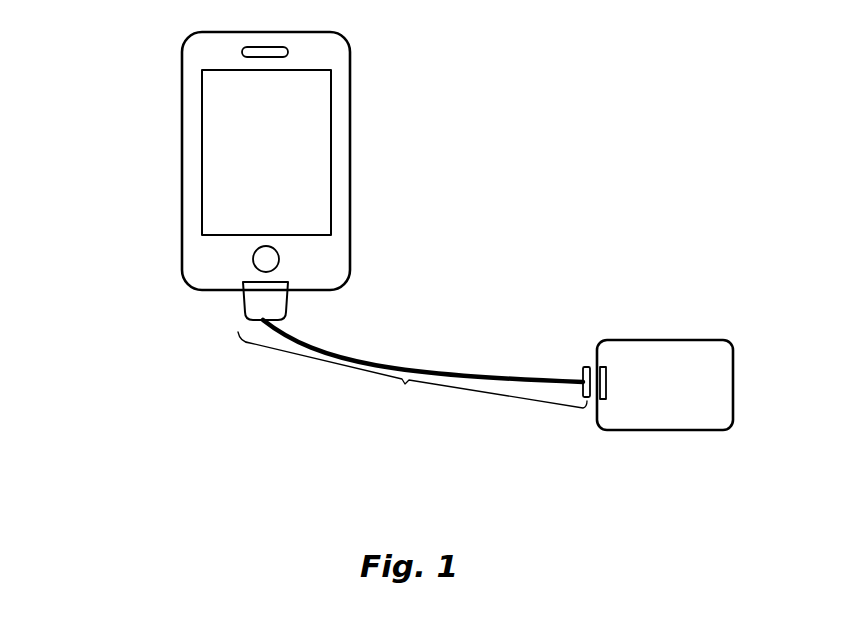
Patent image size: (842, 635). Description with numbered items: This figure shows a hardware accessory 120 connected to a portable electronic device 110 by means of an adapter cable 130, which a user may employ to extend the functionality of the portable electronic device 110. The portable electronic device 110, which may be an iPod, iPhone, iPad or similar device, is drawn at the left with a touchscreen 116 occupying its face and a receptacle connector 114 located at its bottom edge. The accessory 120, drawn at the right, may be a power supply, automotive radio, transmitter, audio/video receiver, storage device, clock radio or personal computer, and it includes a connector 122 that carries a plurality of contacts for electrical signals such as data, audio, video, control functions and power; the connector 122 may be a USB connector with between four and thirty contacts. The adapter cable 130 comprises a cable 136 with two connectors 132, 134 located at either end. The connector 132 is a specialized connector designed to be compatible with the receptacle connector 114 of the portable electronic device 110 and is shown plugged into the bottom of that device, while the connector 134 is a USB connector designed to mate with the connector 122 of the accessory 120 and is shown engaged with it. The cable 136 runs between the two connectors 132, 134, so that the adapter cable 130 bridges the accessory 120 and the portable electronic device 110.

The portable electronic device 110 is at (350, 118).
The receptacle connector 114 is at (288, 280).
The touchscreen 116 is at (215, 145).
The hardware accessory 120 is at (597, 415).
The connector 122 is at (602, 368).
The adapter cable 130 is at (403, 392).
The connector 132 is at (245, 310).
The connector 134 is at (582, 373).
The cable 136 is at (420, 367).